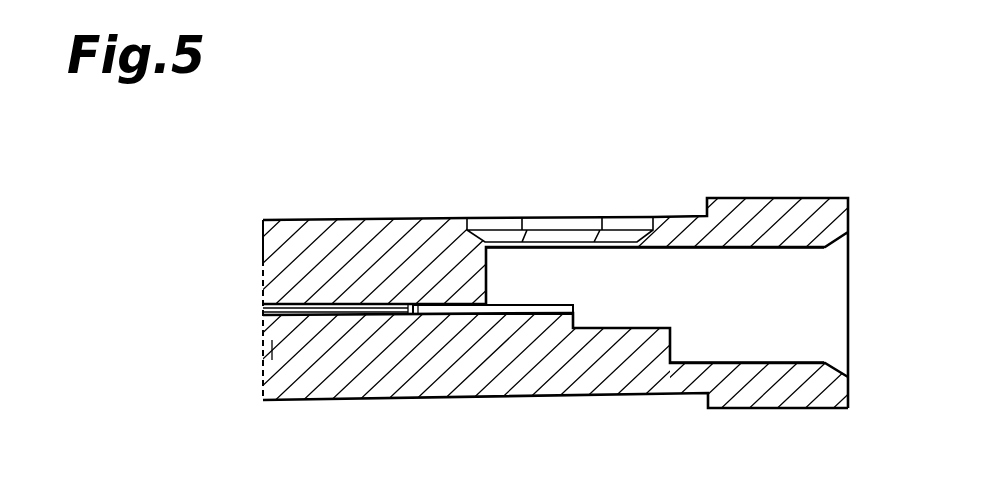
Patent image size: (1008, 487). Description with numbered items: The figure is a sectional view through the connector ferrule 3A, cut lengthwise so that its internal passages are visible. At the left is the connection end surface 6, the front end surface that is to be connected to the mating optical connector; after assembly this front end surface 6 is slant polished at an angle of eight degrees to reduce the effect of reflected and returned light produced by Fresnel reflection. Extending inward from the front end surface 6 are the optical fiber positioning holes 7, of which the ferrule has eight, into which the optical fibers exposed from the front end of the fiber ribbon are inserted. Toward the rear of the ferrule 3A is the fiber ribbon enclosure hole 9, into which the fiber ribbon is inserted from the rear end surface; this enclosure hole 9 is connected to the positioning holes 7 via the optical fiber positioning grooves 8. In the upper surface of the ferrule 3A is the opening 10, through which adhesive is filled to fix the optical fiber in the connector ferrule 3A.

The connector ferrule 3A is at (800, 199).
The connection end surface 6 is at (263, 220).
The optical fiber positioning holes 7 is at (373, 305).
The optical fiber positioning grooves 8 is at (507, 305).
The fiber ribbon enclosure hole 9 is at (718, 280).
The opening 10 is at (558, 217).